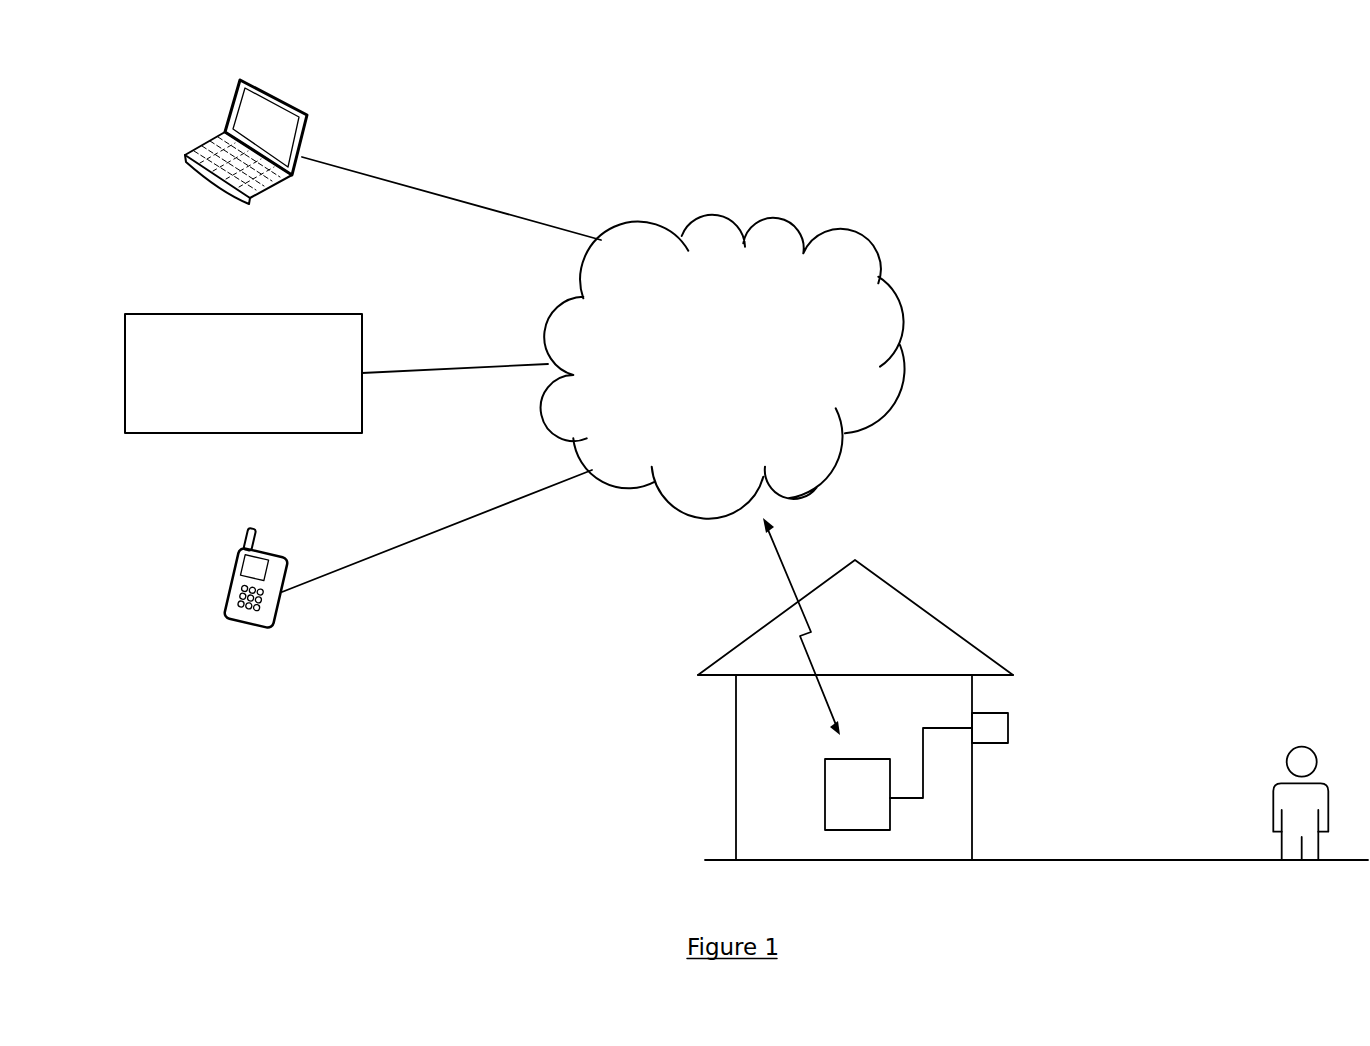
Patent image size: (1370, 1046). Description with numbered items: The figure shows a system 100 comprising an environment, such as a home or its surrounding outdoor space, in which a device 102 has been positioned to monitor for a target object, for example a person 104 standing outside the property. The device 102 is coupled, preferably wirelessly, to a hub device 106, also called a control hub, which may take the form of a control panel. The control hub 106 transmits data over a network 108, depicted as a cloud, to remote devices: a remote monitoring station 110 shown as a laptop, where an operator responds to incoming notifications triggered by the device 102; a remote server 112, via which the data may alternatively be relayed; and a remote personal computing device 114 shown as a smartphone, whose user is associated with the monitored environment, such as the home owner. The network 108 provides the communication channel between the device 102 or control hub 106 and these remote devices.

The system 100 is at (467, 97).
The device 102 is at (1008, 723).
The person 104 is at (1293, 760).
The hub device 106 is at (825, 793).
The network 108 is at (905, 323).
The remote monitoring station 110 is at (284, 172).
The remote server 112 is at (282, 430).
The remote personal computing device 114 is at (275, 620).